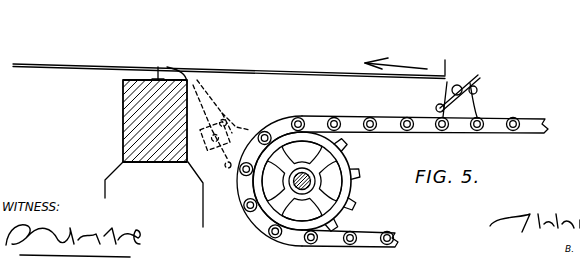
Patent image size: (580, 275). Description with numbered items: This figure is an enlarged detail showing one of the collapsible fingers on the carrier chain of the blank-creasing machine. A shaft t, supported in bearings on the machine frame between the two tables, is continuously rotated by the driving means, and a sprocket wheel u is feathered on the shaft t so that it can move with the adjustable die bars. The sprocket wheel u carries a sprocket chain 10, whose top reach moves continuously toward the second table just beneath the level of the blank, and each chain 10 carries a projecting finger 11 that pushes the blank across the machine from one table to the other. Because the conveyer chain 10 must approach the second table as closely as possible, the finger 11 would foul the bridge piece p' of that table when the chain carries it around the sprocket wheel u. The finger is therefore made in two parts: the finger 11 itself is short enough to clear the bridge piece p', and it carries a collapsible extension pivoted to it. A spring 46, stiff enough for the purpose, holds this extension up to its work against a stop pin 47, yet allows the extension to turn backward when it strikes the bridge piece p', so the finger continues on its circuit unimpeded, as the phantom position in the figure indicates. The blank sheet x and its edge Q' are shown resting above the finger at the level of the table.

The sheet x is at (248, 69).
The sheet edge Q' is at (155, 63).
The bridge piece p' is at (147, 153).
The projecting finger 11 is at (481, 88).
The spring 46 is at (447, 98).
The stop pin 47 is at (477, 83).
The sprocket chain 10 is at (367, 236).
The sprocket wheel u is at (351, 184).
The shaft t is at (293, 190).